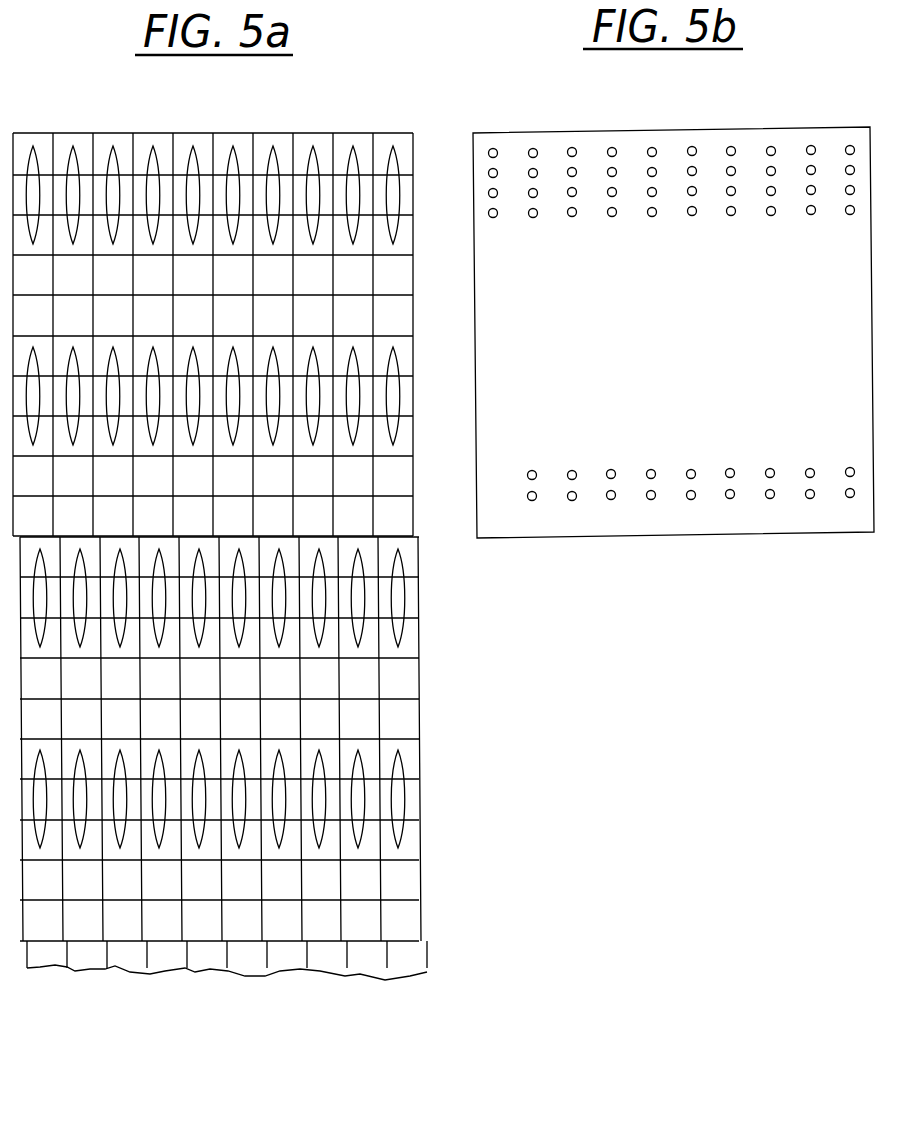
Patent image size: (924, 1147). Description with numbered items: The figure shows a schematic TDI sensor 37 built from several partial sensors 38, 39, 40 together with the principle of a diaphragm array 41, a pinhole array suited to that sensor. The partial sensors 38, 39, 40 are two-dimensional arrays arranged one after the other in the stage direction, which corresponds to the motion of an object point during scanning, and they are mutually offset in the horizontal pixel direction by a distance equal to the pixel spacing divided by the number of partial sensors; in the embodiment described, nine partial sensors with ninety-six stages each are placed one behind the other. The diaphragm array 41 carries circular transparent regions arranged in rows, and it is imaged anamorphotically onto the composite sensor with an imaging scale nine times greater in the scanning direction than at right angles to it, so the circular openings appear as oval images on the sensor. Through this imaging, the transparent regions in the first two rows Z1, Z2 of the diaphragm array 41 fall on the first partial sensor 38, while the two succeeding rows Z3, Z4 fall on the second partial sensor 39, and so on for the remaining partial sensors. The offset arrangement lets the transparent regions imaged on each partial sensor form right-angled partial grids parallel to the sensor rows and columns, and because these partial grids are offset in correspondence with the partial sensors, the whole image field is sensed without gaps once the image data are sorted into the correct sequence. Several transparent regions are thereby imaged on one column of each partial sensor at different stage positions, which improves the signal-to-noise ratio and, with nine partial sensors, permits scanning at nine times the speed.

In FIG. 5a, the TDI sensor 37 is at (65, 112).
In FIG. 5a, the first partial sensor 38 is at (194, 133).
In FIG. 5a, the second partial sensor 39 is at (419, 577).
In FIG. 5a, the partial sensor 40 is at (428, 957).
In FIG. 5b, the diaphragm array 41 is at (655, 130).
In FIG. 5b, the first row of the diaphragm array Z1 is at (492, 148).
In FIG. 5b, the second row of the diaphragm array Z2 is at (489, 174).
In FIG. 5b, the third row of the diaphragm array Z3 is at (490, 194).
In FIG. 5b, the fourth row of the diaphragm array Z4 is at (490, 217).